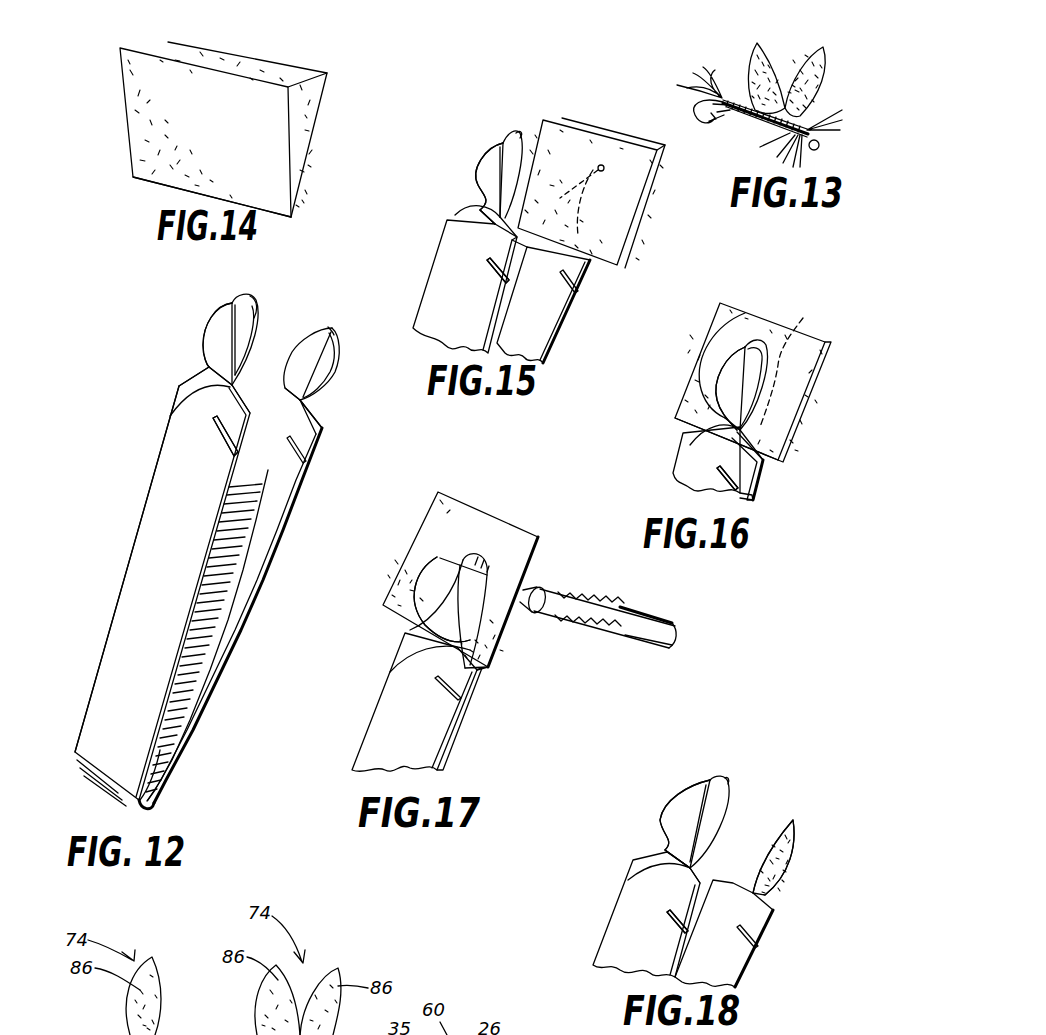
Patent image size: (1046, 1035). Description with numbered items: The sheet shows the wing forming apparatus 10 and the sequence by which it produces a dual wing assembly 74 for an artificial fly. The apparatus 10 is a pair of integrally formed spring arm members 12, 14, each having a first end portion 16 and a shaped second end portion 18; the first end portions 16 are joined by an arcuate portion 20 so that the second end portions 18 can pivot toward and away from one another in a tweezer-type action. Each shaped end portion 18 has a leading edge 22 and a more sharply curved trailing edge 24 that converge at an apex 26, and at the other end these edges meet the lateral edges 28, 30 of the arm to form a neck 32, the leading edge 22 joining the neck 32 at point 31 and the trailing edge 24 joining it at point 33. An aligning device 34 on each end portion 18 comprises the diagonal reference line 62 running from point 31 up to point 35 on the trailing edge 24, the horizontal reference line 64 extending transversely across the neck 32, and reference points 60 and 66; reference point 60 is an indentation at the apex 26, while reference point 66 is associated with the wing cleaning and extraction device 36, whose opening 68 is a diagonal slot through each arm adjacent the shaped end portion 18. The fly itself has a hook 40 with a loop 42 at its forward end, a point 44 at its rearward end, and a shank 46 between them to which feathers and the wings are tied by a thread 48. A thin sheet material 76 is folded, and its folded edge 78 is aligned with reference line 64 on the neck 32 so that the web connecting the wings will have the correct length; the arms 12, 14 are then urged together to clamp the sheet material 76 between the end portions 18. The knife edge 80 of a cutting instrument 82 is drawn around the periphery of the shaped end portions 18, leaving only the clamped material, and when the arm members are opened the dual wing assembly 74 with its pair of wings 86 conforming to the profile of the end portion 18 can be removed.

In FIG. 12, the wing forming apparatus 10 is at (109, 383).
In FIG. 12, the arm member 12 is at (118, 621).
In FIG. 15, the arm member 12 is at (430, 288).
In FIG. 16, the arm member 12 is at (682, 460).
In FIG. 17, the arm member 12 is at (370, 740).
In FIG. 18, the arm member 12 is at (613, 928).
In FIG. 12, the arm member 14 is at (240, 578).
In FIG. 15, the arm member 14 is at (555, 318).
In FIG. 16, the arm member 14 is at (765, 478).
In FIG. 17, the arm member 14 is at (462, 745).
In FIG. 18, the arm member 14 is at (738, 965).
In FIG. 12, the first end portion 16 is at (117, 772).
In FIG. 12, the second end portion 18 is at (205, 345).
In FIG. 15, the second end portion 18 is at (478, 172).
In FIG. 16, the second end portion 18 is at (715, 378).
In FIG. 17, the second end portion 18 is at (425, 575).
In FIG. 18, the second end portion 18 is at (690, 800).
In FIG. 12, the arcuate portion 20 is at (148, 808).
In FIG. 12, the leading edge 22 is at (257, 310).
In FIG. 12, the trailing edge 24 is at (233, 315).
In FIG. 12, the apex 26 is at (242, 297).
In FIG. 15, the apex 26 is at (505, 130).
In FIG. 16, the apex 26 is at (762, 345).
In FIG. 17, the apex 26 is at (470, 560).
In FIG. 18, the apex 26 is at (712, 783).
In FIG. 12, the lateral edge 28 is at (212, 583).
In FIG. 12, the lateral edge 30 is at (132, 555).
In FIG. 12, the point 31 is at (235, 386).
In FIG. 15, the point 31 is at (497, 228).
In FIG. 16, the point 31 is at (745, 433).
In FIG. 18, the point 31 is at (688, 865).
In FIG. 12, the neck 32 is at (205, 370).
In FIG. 12, the point 33 is at (285, 390).
In FIG. 15, the point 33 is at (478, 205).
In FIG. 16, the point 33 is at (728, 420).
In FIG. 18, the point 33 is at (672, 845).
In FIG. 12, the aligning device 34 is at (215, 352).
In FIG. 15, the aligning device 34 is at (466, 243).
In FIG. 12, the point 35 is at (230, 305).
In FIG. 15, the point 35 is at (502, 148).
In FIG. 16, the point 35 is at (745, 350).
In FIG. 18, the point 35 is at (698, 790).
In FIG. 12, the wing cleaning and extraction device 36 is at (200, 438).
In FIG. 13, the hook 40 is at (700, 100).
In FIG. 13, the loop 42 is at (822, 142).
In FIG. 13, the point 44 is at (716, 130).
In FIG. 13, the shank 46 is at (741, 100).
In FIG. 13, the thread 48 is at (730, 118).
In FIG. 12, the reference point 60 is at (331, 331).
In FIG. 15, the reference point 60 is at (520, 133).
In FIG. 18, the reference point 60 is at (727, 780).
In FIG. 12, the diagonal reference line 62 is at (218, 330).
In FIG. 15, the diagonal reference line 62 is at (498, 160).
In FIG. 16, the diagonal reference line 62 is at (730, 360).
In FIG. 17, the diagonal reference line 62 is at (458, 615).
In FIG. 18, the diagonal reference line 62 is at (693, 810).
In FIG. 12, the horizontal reference line 64 is at (170, 416).
In FIG. 15, the horizontal reference line 64 is at (482, 215).
In FIG. 16, the horizontal reference line 64 is at (690, 445).
In FIG. 17, the horizontal reference line 64 is at (392, 672).
In FIG. 18, the horizontal reference line 64 is at (628, 880).
In FIG. 12, the reference point 66 is at (216, 419).
In FIG. 15, the reference point 66 is at (485, 262).
In FIG. 16, the reference point 66 is at (717, 470).
In FIG. 18, the reference point 66 is at (667, 912).
In FIG. 12, the opening 68 is at (225, 455).
In FIG. 15, the opening 68 is at (500, 278).
In FIG. 16, the opening 68 is at (727, 488).
In FIG. 17, the opening 68 is at (450, 703).
In FIG. 18, the opening 68 is at (678, 925).
In FIG. 13, the dual wing assembly 74 is at (790, 44).
In FIG. 14, the thin sheet material 76 is at (160, 100).
In FIG. 15, the thin sheet material 76 is at (612, 232).
In FIG. 16, the thin sheet material 76 is at (800, 377).
In FIG. 17, the thin sheet material 76 is at (507, 530).
In FIG. 14, the folded edge 78 is at (178, 188).
In FIG. 16, the folded edge 78 is at (770, 458).
In FIG. 17, the folded edge 78 is at (485, 668).
In FIG. 17, the knife edge 80 is at (437, 557).
In FIG. 17, the cutting instrument 82 is at (652, 622).
In FIG. 13, the wings 86 is at (756, 68).
In FIG. 18, the wings 86 is at (790, 848).